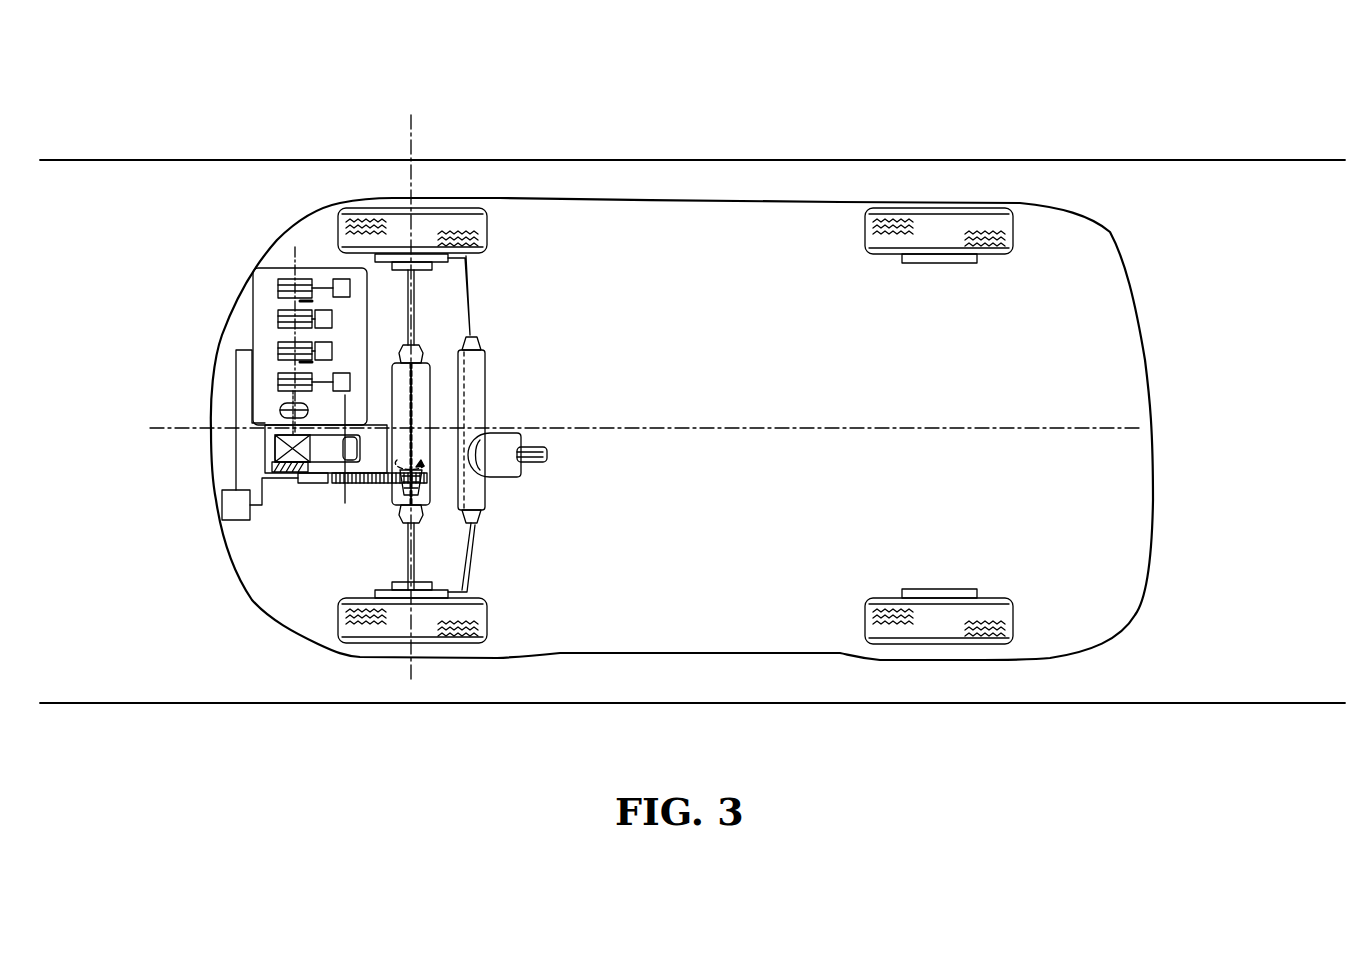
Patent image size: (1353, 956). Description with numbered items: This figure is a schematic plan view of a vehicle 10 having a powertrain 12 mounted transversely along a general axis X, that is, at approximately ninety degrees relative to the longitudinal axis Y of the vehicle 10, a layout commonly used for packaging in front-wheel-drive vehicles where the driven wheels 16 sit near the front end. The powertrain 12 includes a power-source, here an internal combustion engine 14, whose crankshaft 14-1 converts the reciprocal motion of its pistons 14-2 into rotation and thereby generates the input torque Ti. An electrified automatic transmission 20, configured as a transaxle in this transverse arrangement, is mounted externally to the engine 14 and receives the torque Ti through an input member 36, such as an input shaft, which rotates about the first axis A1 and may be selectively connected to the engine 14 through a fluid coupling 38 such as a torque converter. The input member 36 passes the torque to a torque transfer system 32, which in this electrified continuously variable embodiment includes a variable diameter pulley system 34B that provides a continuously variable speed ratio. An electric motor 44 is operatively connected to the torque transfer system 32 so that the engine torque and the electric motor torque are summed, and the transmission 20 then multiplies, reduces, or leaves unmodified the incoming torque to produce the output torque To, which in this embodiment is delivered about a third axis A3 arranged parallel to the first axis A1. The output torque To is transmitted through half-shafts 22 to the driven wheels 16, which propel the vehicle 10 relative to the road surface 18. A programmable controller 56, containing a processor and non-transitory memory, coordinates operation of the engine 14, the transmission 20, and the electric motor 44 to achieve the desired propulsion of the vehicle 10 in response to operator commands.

The vehicle 10 is at (981, 135).
The powertrain 12 is at (302, 504).
The power-source 14 is at (264, 270).
The crankshaft 14-1 is at (288, 312).
The pistons 14-2 is at (340, 280).
The driven wheels 16 is at (434, 218).
The road surface 18 is at (204, 671).
The automatic transmission 20 is at (292, 485).
The half-shafts 22 is at (415, 325).
The torque transfer system 32 is at (275, 452).
The variable diameter pulley system 34B is at (370, 422).
The input member 36 is at (270, 440).
The fluid coupling 38 is at (282, 406).
The electric motor 44 is at (315, 487).
The controller 56 is at (260, 435).
The first axis A1 is at (290, 253).
The third axis A3 is at (340, 406).
The input torque Ti is at (278, 408).
The transmission output torque To is at (428, 463).
The general axis X is at (415, 146).
The longitudinal axis Y is at (160, 428).